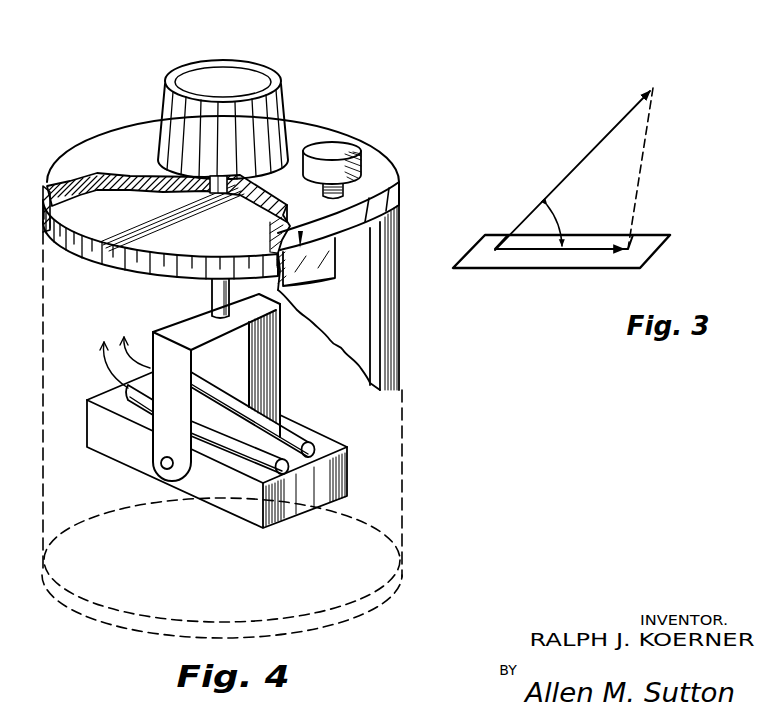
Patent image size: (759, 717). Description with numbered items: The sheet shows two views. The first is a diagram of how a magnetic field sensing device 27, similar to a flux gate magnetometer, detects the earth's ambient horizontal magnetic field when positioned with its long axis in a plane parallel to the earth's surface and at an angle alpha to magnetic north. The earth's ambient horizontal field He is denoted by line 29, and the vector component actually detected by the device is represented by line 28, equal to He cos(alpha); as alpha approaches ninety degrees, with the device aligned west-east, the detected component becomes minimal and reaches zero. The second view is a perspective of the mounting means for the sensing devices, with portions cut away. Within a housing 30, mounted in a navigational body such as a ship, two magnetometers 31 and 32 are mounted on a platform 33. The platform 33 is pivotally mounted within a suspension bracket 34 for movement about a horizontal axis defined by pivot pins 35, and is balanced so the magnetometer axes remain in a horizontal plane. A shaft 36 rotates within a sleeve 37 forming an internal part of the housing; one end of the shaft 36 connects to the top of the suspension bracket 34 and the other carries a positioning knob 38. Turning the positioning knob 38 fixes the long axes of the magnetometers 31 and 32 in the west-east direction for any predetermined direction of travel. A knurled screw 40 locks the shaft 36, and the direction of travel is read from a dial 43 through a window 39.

In FIG. 3, the magnetic field sensing device 27 is at (662, 235).
In FIG. 3, the line representing detected vector component 28 is at (590, 250).
In FIG. 3, the line representing earth's ambient horizontal magnetic field 29 is at (607, 136).
In FIG. 4, the housing 30 is at (303, 120).
In FIG. 4, the magnetometer 31 is at (290, 430).
In FIG. 4, the magnetometer 32 is at (237, 443).
In FIG. 4, the platform 33 is at (347, 465).
In FIG. 4, the suspension bracket 34 is at (282, 370).
In FIG. 4, the pivot pins 35 is at (162, 468).
In FIG. 4, the shaft 36 is at (212, 299).
In FIG. 4, the sleeve 37 is at (210, 191).
In FIG. 4, the positioning knob 38 is at (257, 64).
In FIG. 4, the window 39 is at (313, 282).
In FIG. 4, the knurled screw 40 is at (312, 181).
In FIG. 4, the dial 43 is at (118, 268).